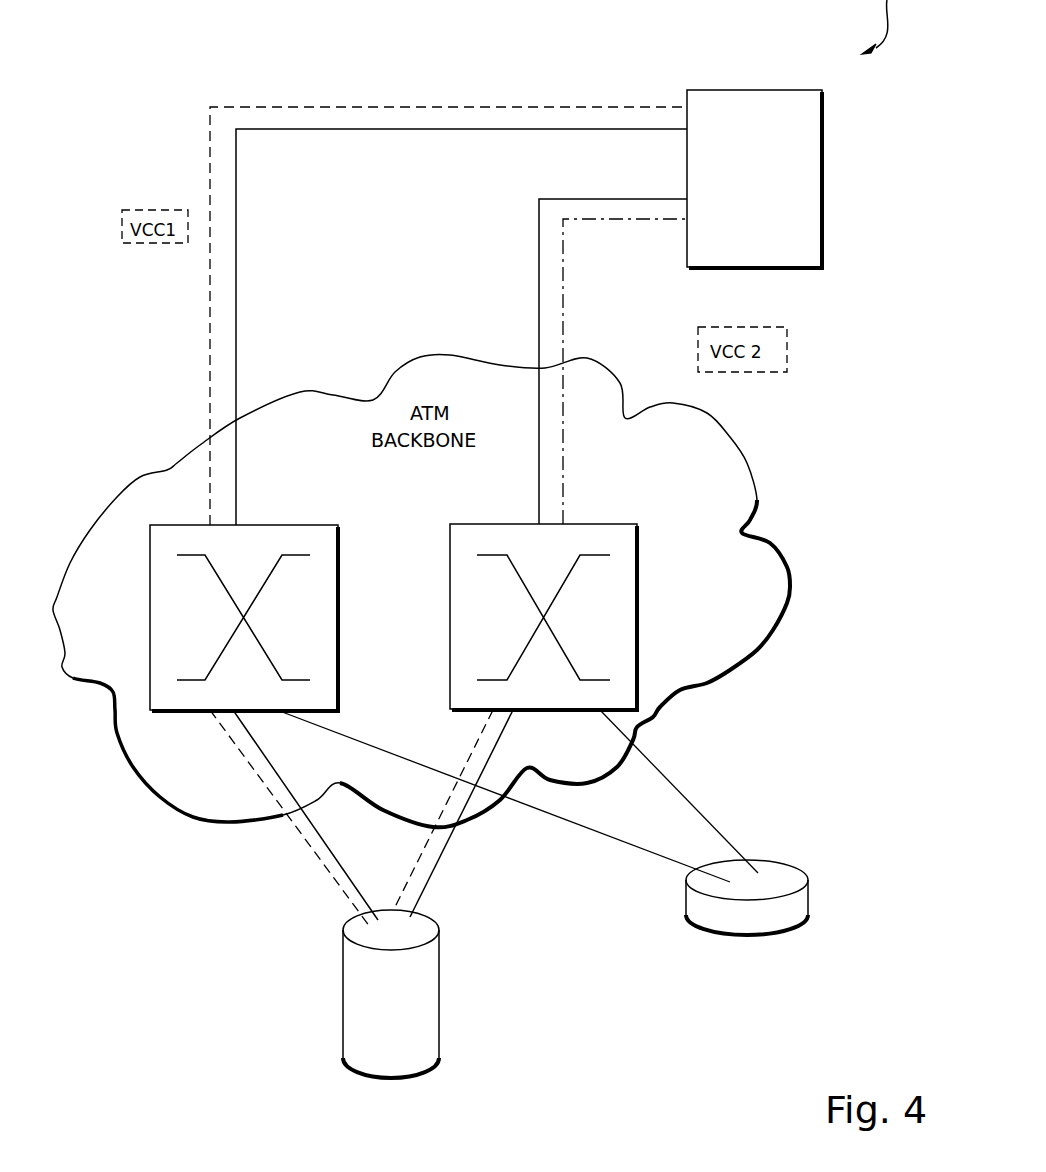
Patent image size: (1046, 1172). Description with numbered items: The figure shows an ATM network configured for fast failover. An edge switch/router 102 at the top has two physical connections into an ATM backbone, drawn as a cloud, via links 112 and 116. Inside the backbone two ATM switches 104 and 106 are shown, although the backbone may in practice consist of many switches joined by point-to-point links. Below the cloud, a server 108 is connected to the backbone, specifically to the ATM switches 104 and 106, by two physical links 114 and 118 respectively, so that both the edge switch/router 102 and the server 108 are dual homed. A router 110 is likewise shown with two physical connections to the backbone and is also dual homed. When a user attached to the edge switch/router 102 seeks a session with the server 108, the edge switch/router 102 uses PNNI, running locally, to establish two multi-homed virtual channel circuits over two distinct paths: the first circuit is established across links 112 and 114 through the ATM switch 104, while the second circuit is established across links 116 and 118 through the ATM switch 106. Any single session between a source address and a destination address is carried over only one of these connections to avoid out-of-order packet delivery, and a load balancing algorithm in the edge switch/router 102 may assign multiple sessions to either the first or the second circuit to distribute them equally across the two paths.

The edge switch/router 102 is at (808, 252).
The ATM switch 104 is at (294, 525).
The ATM switch 106 is at (593, 524).
The server 108 is at (443, 997).
The router 110 is at (811, 897).
The link 112 is at (240, 221).
The link 114 is at (331, 844).
The link 116 is at (540, 262).
The link 118 is at (436, 876).